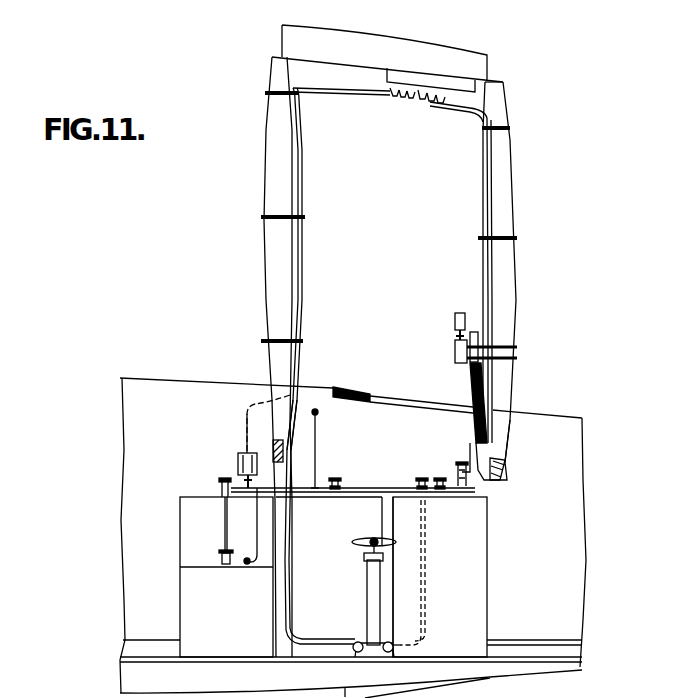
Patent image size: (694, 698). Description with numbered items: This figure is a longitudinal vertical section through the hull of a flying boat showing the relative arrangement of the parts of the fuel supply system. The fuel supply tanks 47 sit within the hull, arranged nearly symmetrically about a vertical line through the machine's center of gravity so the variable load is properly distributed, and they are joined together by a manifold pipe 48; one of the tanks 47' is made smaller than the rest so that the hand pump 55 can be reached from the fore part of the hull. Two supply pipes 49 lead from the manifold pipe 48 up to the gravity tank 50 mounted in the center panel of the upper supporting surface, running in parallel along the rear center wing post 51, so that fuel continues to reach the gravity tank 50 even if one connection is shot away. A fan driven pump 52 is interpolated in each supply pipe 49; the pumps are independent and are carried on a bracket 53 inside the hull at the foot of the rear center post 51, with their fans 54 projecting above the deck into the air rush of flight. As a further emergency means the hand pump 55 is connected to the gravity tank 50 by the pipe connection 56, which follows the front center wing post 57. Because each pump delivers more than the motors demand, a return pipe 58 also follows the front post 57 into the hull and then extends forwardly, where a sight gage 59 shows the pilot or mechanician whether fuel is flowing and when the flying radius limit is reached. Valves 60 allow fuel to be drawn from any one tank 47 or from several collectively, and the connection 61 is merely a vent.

The supply tank 47 is at (460, 577).
The smaller tank 47' is at (203, 577).
The manifold pipe 48 is at (377, 492).
The supply pipe 49 is at (485, 287).
The gravity tank 50 is at (438, 80).
The rear center wing post 51 is at (502, 210).
The fan driven pump 52 is at (480, 425).
The bracket 53 is at (493, 453).
The fan 54 is at (455, 352).
The hand pump 55 is at (367, 580).
The pipe connection 56 is at (294, 398).
The front center wing post 57 is at (265, 172).
The return pipe 58 is at (243, 402).
The sight gage 59 is at (238, 465).
The valve 60 is at (221, 483).
The vent 61 is at (318, 441).